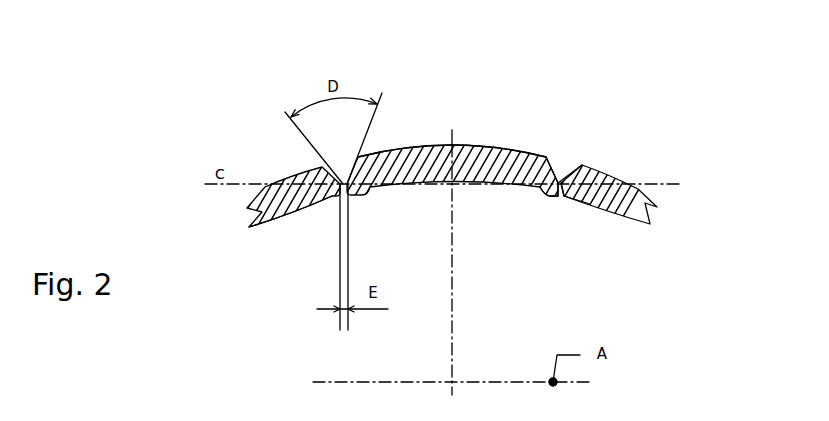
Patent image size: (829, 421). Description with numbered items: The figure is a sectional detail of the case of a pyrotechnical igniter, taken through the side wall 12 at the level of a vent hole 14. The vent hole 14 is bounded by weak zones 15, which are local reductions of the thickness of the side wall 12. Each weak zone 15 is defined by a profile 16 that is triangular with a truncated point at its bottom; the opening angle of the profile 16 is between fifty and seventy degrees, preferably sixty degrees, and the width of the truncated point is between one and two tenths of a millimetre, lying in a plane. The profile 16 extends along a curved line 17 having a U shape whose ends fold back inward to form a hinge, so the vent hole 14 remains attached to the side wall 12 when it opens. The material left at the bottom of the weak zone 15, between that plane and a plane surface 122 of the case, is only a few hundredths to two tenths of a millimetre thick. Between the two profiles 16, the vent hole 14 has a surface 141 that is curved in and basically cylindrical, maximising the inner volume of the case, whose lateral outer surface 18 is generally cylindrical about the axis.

The side wall 12 is at (285, 205).
The vent hole 14 is at (503, 158).
The surface 141 is at (455, 147).
The weak zone 15 is at (561, 168).
The profile 16 is at (577, 173).
The curved line 17 is at (555, 197).
The lateral outer surface 18 is at (288, 173).
The plane surface 122 is at (562, 197).